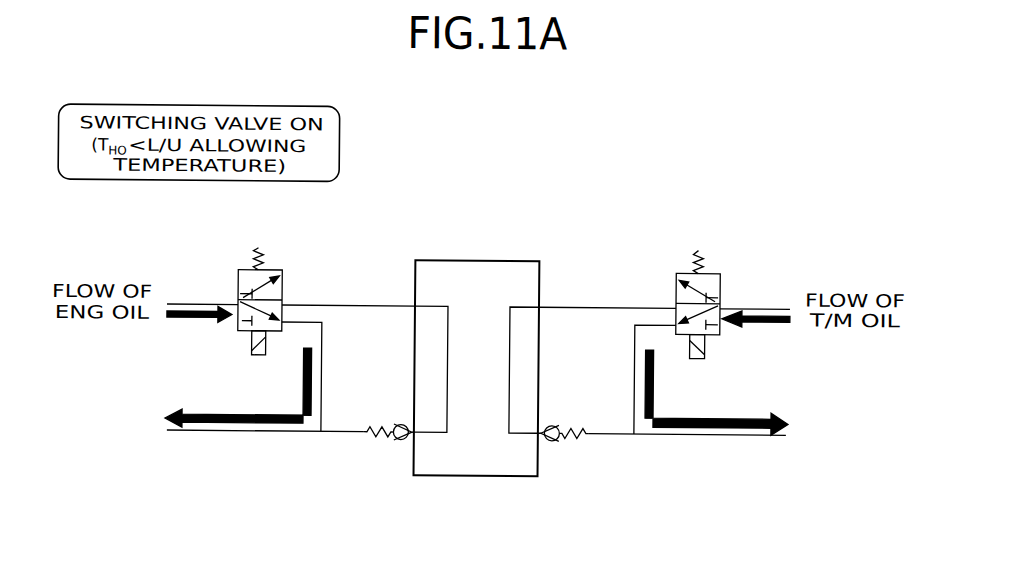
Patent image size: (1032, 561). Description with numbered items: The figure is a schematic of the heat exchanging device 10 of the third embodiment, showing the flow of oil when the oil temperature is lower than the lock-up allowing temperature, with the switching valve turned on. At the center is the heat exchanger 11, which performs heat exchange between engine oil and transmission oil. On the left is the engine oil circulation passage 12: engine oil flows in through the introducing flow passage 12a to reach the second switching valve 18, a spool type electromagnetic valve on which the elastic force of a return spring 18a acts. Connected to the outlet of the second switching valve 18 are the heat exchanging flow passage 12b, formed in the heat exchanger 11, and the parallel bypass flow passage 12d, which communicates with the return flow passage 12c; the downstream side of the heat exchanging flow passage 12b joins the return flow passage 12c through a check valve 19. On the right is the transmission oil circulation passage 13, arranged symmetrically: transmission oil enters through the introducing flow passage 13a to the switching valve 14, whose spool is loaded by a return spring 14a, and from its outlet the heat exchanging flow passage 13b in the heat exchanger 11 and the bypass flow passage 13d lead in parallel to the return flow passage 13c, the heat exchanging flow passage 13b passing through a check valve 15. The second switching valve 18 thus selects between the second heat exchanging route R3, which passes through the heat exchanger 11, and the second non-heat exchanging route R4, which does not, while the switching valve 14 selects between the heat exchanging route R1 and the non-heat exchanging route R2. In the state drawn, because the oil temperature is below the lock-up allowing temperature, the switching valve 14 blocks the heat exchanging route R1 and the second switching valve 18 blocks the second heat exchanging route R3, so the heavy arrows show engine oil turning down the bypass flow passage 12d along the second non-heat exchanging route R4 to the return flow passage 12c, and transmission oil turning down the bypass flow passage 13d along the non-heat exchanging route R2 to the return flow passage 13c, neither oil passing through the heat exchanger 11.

The heat exchanging device 10 is at (560, 194).
The heat exchanger 11 is at (482, 258).
The engine oil circulation passage 12 is at (325, 472).
The introducing flow passage 12a is at (187, 303).
The heat exchanging flow passage 12b is at (448, 320).
The return flow passage 12c is at (222, 432).
The bypass flow passage 12d is at (322, 342).
The transmission oil circulation passage 13 is at (628, 472).
The introducing flow passage 13a is at (770, 303).
The heat exchanging flow passage 13b is at (510, 415).
The return flow passage 13c is at (728, 432).
The bypass flow passage 13d is at (635, 341).
The switching valve 14 is at (740, 348).
The return spring 14a is at (698, 246).
The check valve 15 is at (567, 458).
The second switching valve 18 is at (218, 346).
The return spring 18a is at (258, 247).
The check valve 19 is at (384, 458).
The heat exchanging route R1 is at (634, 294).
The non-heat exchanging route R2 is at (624, 368).
The second heat exchanging route R3 is at (401, 294).
The second non-heat exchanging route R4 is at (332, 365).